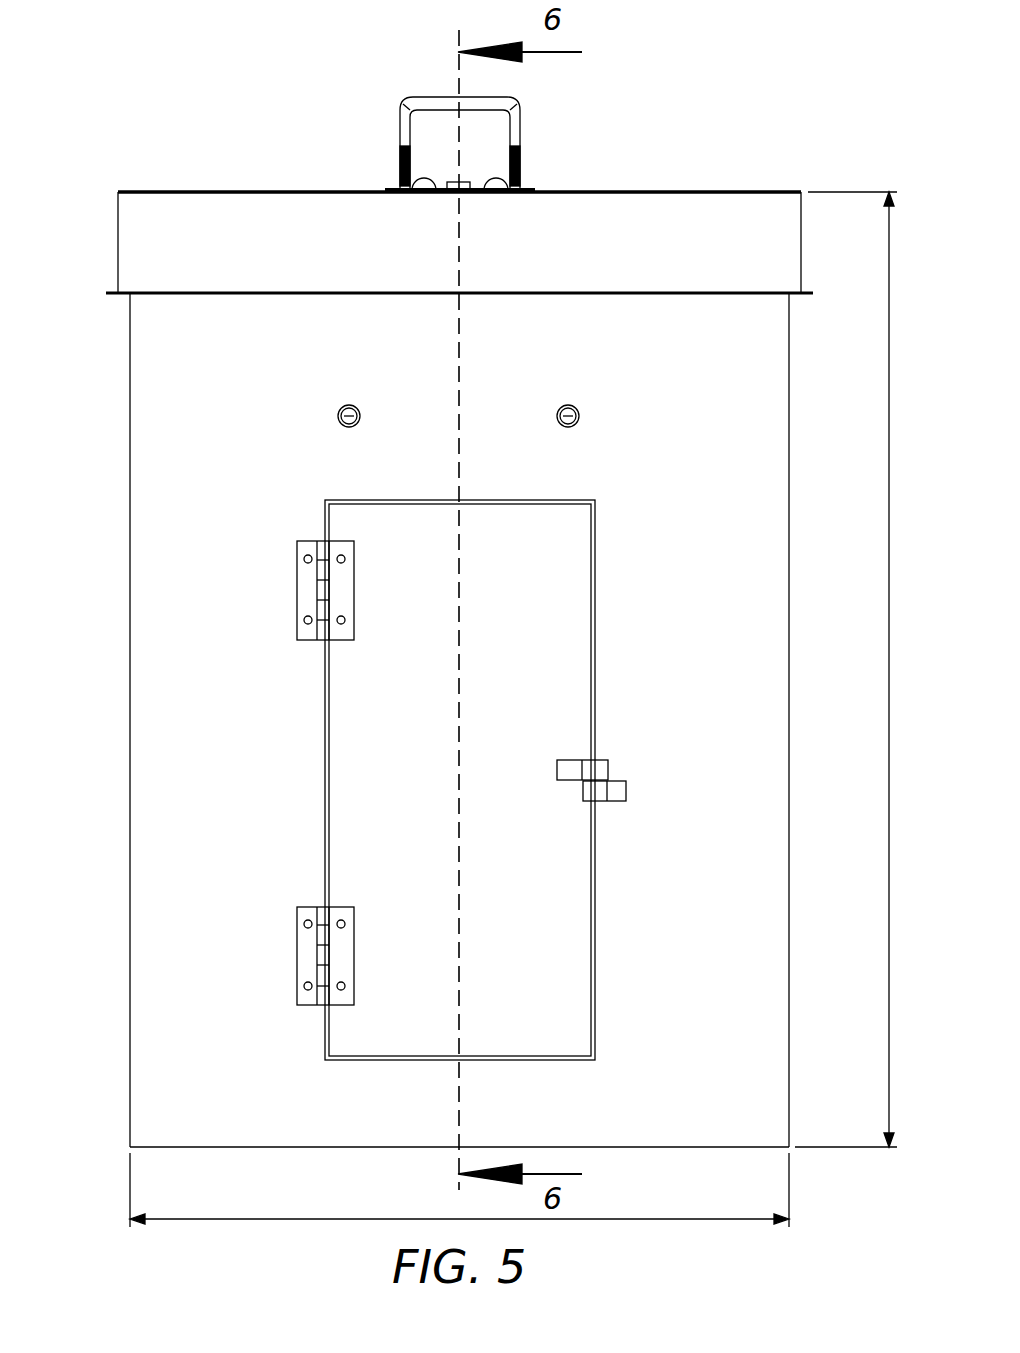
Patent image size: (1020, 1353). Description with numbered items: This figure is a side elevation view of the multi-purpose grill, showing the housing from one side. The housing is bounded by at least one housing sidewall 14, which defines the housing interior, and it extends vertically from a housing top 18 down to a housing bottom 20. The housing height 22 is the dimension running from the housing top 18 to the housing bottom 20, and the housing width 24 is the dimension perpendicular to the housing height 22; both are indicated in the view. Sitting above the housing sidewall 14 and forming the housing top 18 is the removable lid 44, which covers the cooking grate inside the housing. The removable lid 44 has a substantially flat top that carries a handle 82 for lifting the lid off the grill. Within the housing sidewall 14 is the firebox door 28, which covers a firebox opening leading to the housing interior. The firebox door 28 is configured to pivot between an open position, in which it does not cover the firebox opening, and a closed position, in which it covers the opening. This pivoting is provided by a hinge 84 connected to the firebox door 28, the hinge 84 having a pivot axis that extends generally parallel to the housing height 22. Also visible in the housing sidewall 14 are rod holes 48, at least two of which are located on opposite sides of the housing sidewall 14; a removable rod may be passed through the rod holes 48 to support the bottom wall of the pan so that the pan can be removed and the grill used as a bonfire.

The housing sidewall 14 is at (752, 400).
The housing top 18 is at (148, 186).
The housing bottom 20 is at (251, 1160).
The housing height 22 is at (888, 515).
The housing width 24 is at (664, 1218).
The firebox door 28 is at (356, 1033).
The removable lid 44 is at (172, 240).
The rod holes 48 is at (556, 416).
The handle 82 is at (406, 106).
The hinge 84 is at (306, 590).